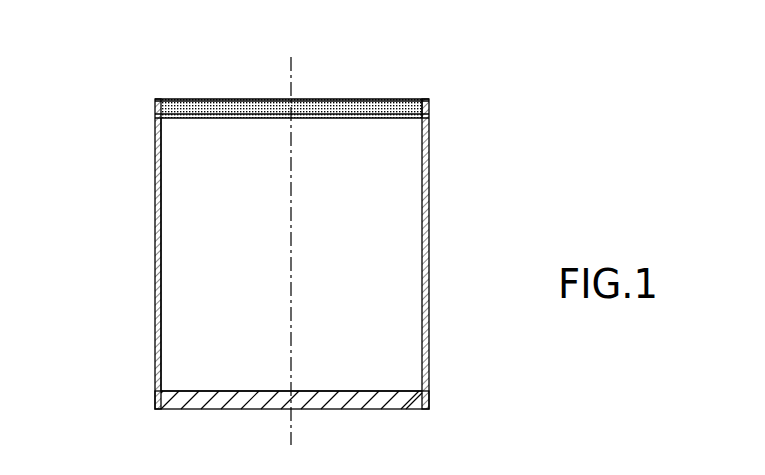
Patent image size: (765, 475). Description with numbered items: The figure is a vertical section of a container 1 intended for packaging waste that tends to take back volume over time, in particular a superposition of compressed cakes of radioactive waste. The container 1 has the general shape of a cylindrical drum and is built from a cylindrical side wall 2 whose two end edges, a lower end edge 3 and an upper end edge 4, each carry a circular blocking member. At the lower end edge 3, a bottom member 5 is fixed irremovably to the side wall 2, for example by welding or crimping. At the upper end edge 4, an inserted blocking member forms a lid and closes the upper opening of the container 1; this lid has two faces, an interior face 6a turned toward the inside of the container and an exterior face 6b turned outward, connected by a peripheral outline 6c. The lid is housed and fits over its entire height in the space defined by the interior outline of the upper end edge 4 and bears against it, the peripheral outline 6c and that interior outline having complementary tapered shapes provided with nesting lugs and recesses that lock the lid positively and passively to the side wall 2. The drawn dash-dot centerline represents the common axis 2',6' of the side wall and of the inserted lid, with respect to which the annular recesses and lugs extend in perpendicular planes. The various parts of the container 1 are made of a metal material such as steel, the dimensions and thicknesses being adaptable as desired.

The container 1 is at (305, 209).
The cylindrical side wall 2 is at (464, 254).
The axis of the side wall and axis of the inserted blocking member 2',6' is at (179, 254).
The lower end edge 3 is at (144, 398).
The upper end edge 4 is at (144, 110).
The bottom member 5 is at (391, 391).
The interior face 6a is at (198, 126).
The exterior face 6b is at (201, 93).
The peripheral outline 6c is at (430, 106).